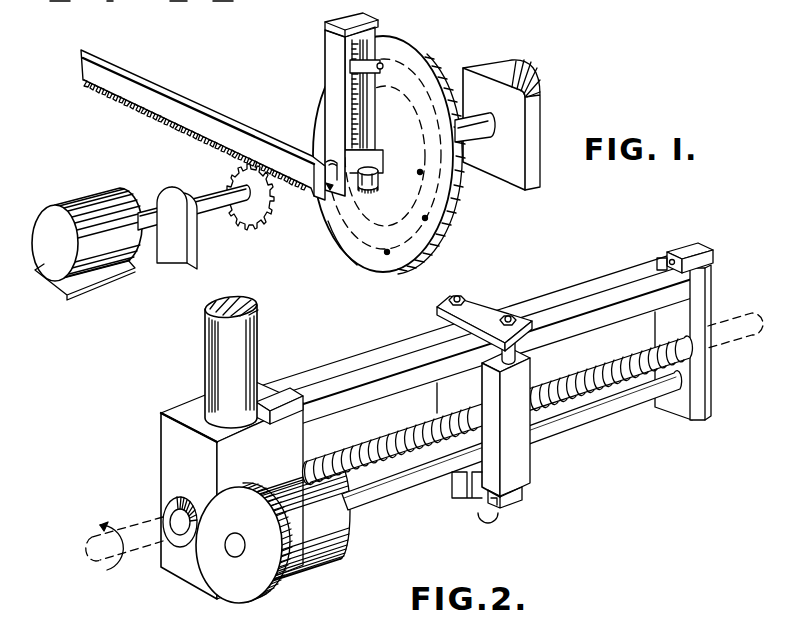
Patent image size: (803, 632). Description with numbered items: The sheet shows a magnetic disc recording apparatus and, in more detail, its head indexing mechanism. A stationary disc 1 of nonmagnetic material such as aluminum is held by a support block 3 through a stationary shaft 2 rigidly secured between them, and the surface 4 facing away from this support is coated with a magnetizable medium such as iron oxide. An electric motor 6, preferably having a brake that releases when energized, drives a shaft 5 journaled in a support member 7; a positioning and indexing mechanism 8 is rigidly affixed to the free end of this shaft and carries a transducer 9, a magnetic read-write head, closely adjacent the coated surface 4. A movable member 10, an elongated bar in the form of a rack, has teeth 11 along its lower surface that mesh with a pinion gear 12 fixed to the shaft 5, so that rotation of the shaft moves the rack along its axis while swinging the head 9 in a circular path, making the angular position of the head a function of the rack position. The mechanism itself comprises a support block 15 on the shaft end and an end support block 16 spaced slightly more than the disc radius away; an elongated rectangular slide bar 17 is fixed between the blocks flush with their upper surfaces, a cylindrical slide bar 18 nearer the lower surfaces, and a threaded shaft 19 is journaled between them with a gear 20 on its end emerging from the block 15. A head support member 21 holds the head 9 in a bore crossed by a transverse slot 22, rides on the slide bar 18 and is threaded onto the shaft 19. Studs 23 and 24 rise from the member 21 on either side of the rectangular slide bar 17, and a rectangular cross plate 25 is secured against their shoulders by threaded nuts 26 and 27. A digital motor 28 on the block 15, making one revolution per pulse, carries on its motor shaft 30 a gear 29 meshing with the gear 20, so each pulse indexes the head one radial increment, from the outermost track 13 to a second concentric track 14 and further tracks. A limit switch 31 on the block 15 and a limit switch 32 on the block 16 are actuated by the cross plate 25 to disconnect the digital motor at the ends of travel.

In FIG. 1, the stationary disc 1 is at (389, 148).
In FIG. 1, the stationary shaft 2 is at (458, 123).
In FIG. 1, the support block 3 is at (513, 73).
In FIG. 1, the surface 4 is at (350, 253).
In FIG. 1, the shaft 5 is at (207, 213).
In FIG. 2, the shaft 5 is at (207, 348).
In FIG. 1, the electric motor 6 is at (82, 203).
In FIG. 1, the support member 7 is at (173, 243).
In FIG. 1, the positioning and indexing mechanism 8 is at (345, 104).
In FIG. 2, the positioning and indexing mechanism 8 is at (476, 342).
In FIG. 1, the transducer 9 is at (378, 65).
In FIG. 2, the transducer 9 is at (498, 514).
In FIG. 1, the movable member 10 is at (203, 125).
In FIG. 1, the teeth 11 is at (180, 132).
In FIG. 1, the pinion gear 12 is at (253, 217).
In FIG. 1, the outermost track 13 is at (417, 62).
In FIG. 1, the second concentric track 14 is at (428, 88).
In FIG. 2, the support block 15 is at (194, 488).
In FIG. 2, the end support block 16 is at (705, 303).
In FIG. 2, the elongated rectangular slide bar 17 is at (563, 295).
In FIG. 2, the cylindrical slide bar 18 is at (612, 418).
In FIG. 2, the threaded shaft 19 is at (578, 368).
In FIG. 2, the gear 20 is at (172, 507).
In FIG. 2, the head support member 21 is at (505, 437).
In FIG. 2, the slot 22 is at (466, 498).
In FIG. 2, the stud 23 is at (518, 350).
In FIG. 2, the stud 24 is at (458, 294).
In FIG. 2, the rectangular cross plate 25 is at (488, 305).
In FIG. 2, the threaded nut 26 is at (448, 282).
In FIG. 2, the threaded nut 27 is at (514, 316).
In FIG. 1, the digital motor 28 is at (379, 176).
In FIG. 2, the digital motor 28 is at (320, 552).
In FIG. 2, the gear 29 is at (248, 555).
In FIG. 2, the motor shaft 30 is at (234, 557).
In FIG. 2, the limit switch 31 is at (280, 400).
In FIG. 2, the limit switch 32 is at (696, 249).